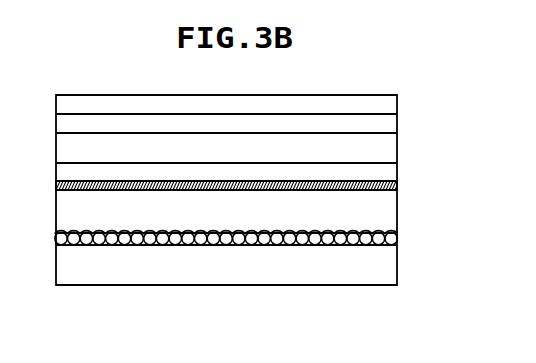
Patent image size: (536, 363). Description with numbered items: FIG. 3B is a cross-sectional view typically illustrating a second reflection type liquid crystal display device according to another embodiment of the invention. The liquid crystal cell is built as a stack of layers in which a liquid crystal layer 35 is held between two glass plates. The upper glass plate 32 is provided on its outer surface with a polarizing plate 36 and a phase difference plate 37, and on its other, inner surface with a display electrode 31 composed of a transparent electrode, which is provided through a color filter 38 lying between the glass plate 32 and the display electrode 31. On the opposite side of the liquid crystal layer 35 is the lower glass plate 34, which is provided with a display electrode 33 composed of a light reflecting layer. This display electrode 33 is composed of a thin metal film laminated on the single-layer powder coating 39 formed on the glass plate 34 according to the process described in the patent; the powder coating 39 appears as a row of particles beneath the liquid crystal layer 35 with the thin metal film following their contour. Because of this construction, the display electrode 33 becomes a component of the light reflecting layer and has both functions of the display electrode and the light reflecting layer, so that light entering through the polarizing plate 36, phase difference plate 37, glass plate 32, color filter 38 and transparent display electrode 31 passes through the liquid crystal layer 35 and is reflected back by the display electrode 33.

The polarizing plate 36 is at (397, 107).
The phase difference plate 37 is at (397, 127).
The glass plate 32 is at (397, 153).
The color filter 38 is at (397, 172).
The display electrode 31 is at (397, 190).
The liquid crystal layer 35 is at (397, 212).
The display electrode 33 is at (397, 232).
The single-layer powder coating 39 is at (398, 243).
The glass plate 34 is at (397, 267).